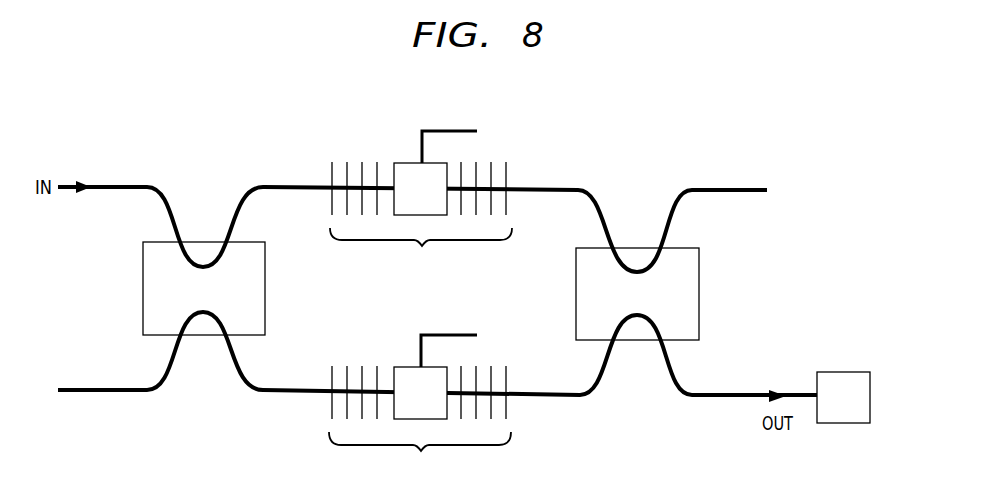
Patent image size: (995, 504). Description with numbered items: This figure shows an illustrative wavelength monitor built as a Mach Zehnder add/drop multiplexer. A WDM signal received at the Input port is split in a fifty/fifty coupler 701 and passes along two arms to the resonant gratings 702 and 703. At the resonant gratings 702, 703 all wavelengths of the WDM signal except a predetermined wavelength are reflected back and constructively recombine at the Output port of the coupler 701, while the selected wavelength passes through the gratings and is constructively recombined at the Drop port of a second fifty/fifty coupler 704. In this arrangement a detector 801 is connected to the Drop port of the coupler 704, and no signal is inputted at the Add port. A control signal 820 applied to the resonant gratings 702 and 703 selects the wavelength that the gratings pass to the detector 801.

The 50/50 coupler 701 is at (143, 288).
The resonant grating 702 is at (421, 220).
The resonant grating 703 is at (420, 423).
The 50/50 coupler 704 is at (699, 293).
The detector 801 is at (870, 398).
The control signal 820 is at (467, 241).